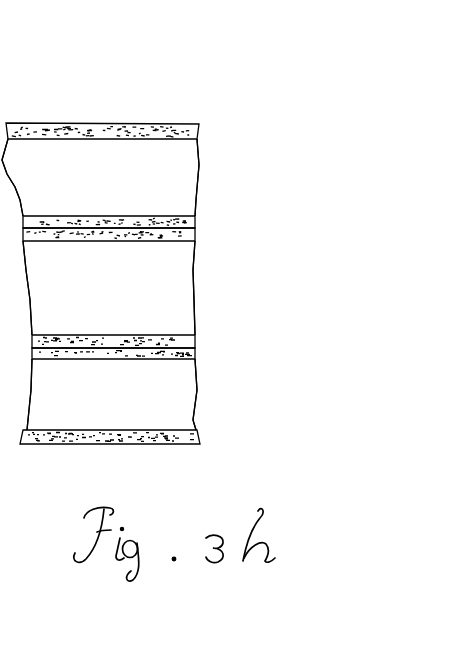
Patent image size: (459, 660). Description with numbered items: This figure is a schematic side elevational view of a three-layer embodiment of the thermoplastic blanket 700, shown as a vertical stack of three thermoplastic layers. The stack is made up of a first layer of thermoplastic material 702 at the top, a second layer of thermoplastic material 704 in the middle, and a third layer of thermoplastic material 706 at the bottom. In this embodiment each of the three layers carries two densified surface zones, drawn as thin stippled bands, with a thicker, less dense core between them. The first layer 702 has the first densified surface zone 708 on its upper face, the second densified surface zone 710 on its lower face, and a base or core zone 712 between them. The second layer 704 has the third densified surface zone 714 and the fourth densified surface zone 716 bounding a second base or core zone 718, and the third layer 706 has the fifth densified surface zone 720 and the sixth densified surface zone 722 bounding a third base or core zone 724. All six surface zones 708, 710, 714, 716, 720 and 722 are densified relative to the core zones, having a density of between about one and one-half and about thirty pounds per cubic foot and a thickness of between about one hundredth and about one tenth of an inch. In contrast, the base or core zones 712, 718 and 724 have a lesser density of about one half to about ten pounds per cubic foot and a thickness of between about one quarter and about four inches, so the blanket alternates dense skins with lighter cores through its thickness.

The thermoplastic blanket 700 is at (362, 50).
The first layer of thermoplastic material 702 is at (310, 183).
The second layer of thermoplastic material 704 is at (345, 292).
The third layer of thermoplastic material 706 is at (274, 412).
The first densified surface zone 708 is at (127, 128).
The second densified surface zone 710 is at (186, 224).
The base or core zone 712 is at (145, 185).
The third densified surface zone 714 is at (186, 234).
The fourth densified surface zone 716 is at (186, 343).
The second base or core zone 718 is at (137, 300).
The fifth densified surface zone 720 is at (186, 353).
The sixth densified surface zone 722 is at (123, 440).
The third base or core zone 724 is at (152, 407).